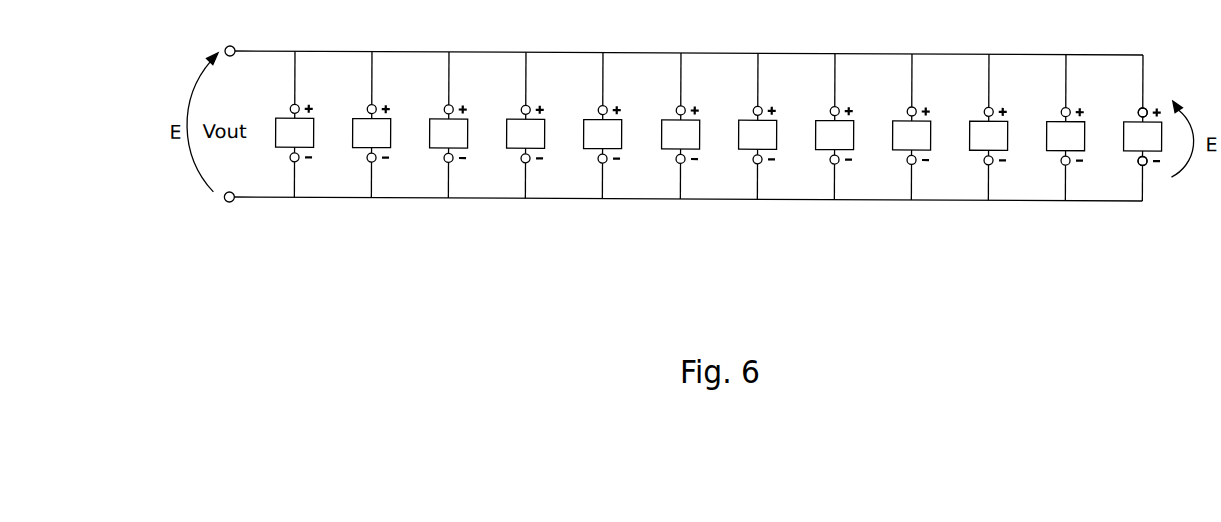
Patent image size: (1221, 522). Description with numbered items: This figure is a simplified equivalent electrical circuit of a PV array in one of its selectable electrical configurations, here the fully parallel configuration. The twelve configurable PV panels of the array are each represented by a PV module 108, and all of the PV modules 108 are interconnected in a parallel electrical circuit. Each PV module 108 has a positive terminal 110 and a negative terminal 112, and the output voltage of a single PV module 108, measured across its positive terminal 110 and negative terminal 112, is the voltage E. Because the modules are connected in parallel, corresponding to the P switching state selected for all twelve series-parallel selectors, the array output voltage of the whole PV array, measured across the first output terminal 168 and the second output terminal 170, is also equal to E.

The PV module 108 is at (718, 126).
The positive terminal 110 is at (1139, 109).
The negative terminal 112 is at (1138, 166).
The first output terminal 168 is at (236, 46).
The second output terminal 170 is at (236, 201).